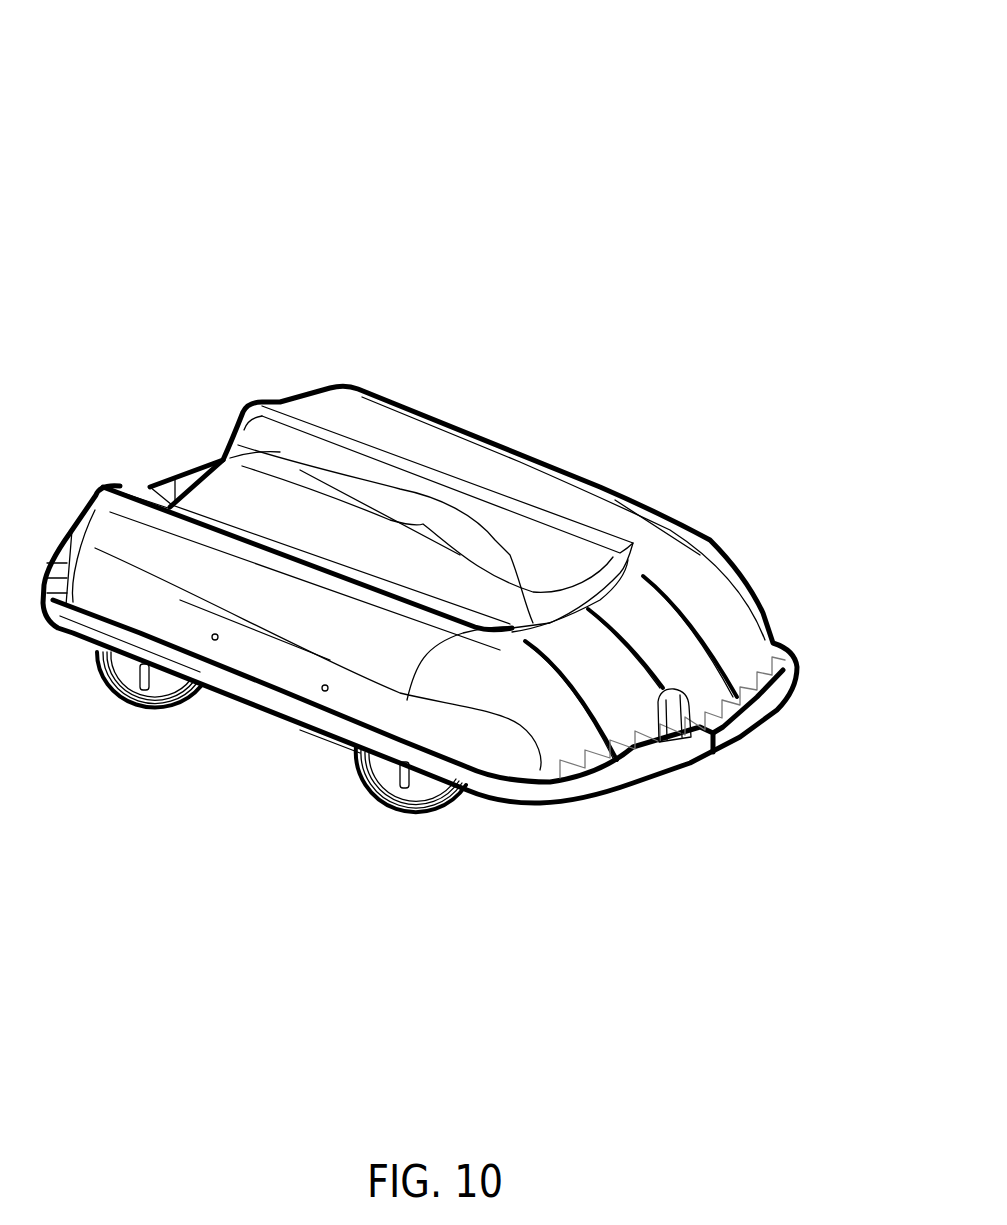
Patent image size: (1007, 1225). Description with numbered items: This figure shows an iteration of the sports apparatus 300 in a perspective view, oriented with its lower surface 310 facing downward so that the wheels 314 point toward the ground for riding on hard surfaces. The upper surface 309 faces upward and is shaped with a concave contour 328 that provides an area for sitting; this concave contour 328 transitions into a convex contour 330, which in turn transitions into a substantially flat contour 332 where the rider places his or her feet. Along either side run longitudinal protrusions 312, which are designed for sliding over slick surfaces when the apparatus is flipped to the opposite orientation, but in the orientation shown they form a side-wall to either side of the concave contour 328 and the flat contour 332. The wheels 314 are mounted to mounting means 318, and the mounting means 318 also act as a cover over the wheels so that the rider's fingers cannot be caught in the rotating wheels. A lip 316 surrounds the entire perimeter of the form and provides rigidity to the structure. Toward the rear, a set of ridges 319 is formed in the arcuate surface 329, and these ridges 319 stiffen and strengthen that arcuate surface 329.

The sports apparatus 300 is at (118, 56).
The upper surface 309 is at (323, 342).
The lower surface 310 is at (484, 861).
The longitudinal protrusions 312 is at (143, 530).
The wheels 314 is at (143, 667).
The lip 316 is at (557, 793).
The mounting means 318 is at (243, 657).
The ridges 319 is at (703, 623).
The concave contour 328 is at (528, 596).
The arcuate surface 329 is at (683, 663).
The convex contour 330 is at (443, 518).
The flat contour 332 is at (298, 499).